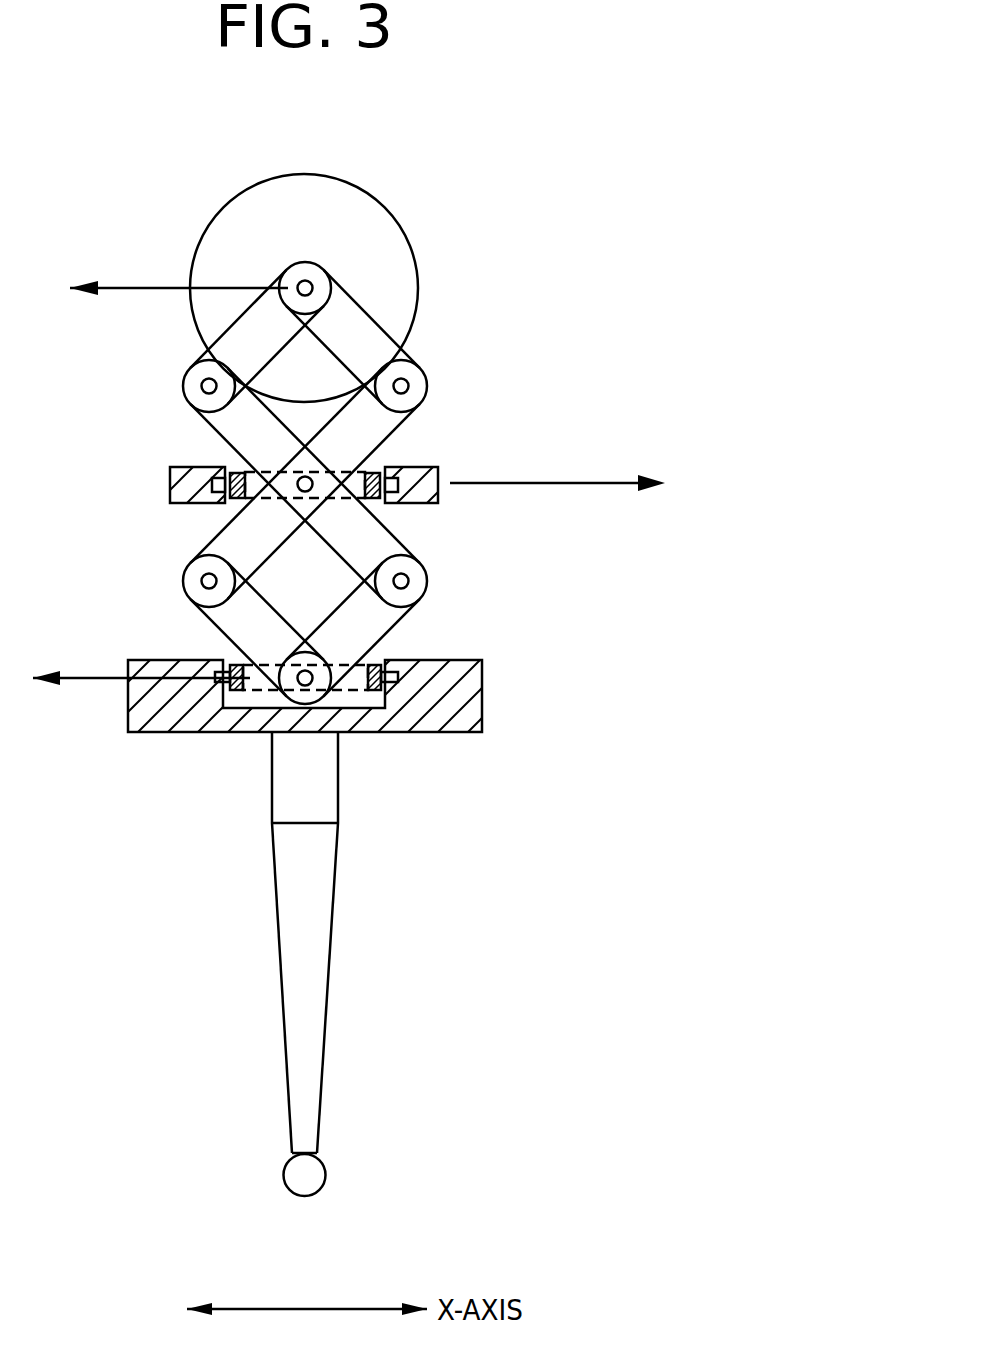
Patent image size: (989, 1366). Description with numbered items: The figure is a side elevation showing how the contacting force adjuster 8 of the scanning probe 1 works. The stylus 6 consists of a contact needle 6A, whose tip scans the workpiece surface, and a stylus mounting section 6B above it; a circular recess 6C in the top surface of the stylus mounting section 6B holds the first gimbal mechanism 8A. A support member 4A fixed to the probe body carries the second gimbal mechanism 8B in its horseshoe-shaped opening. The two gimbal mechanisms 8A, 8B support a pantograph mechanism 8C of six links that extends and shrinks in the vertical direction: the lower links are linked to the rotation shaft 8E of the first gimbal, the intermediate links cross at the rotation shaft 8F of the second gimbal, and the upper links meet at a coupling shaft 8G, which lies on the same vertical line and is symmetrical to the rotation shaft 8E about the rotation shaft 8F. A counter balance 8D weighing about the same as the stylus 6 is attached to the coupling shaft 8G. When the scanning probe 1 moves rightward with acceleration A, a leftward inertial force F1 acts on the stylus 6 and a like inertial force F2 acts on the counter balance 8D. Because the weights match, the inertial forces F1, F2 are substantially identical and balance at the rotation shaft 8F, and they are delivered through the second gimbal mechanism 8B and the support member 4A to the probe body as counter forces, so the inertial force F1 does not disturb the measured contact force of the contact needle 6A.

The scanning probe 1 is at (533, 241).
The support member 4A is at (446, 476).
The stylus 6 is at (320, 898).
The contact needle 6A is at (312, 1070).
The stylus mounting section 6B is at (483, 701).
The recess 6C is at (352, 706).
The contacting force adjuster 8 is at (510, 385).
The first gimbal mechanism 8A is at (384, 666).
The second gimbal mechanism 8B is at (386, 469).
The pantograph mechanism 8C is at (398, 548).
The counter balance 8D is at (390, 234).
The rotation shaft 8E is at (292, 666).
The rotation shaft 8F is at (292, 472).
The coupling shaft 8G is at (292, 283).
The inertial force F1 is at (72, 685).
The inertial force F2 is at (117, 293).
The acceleration A is at (612, 487).